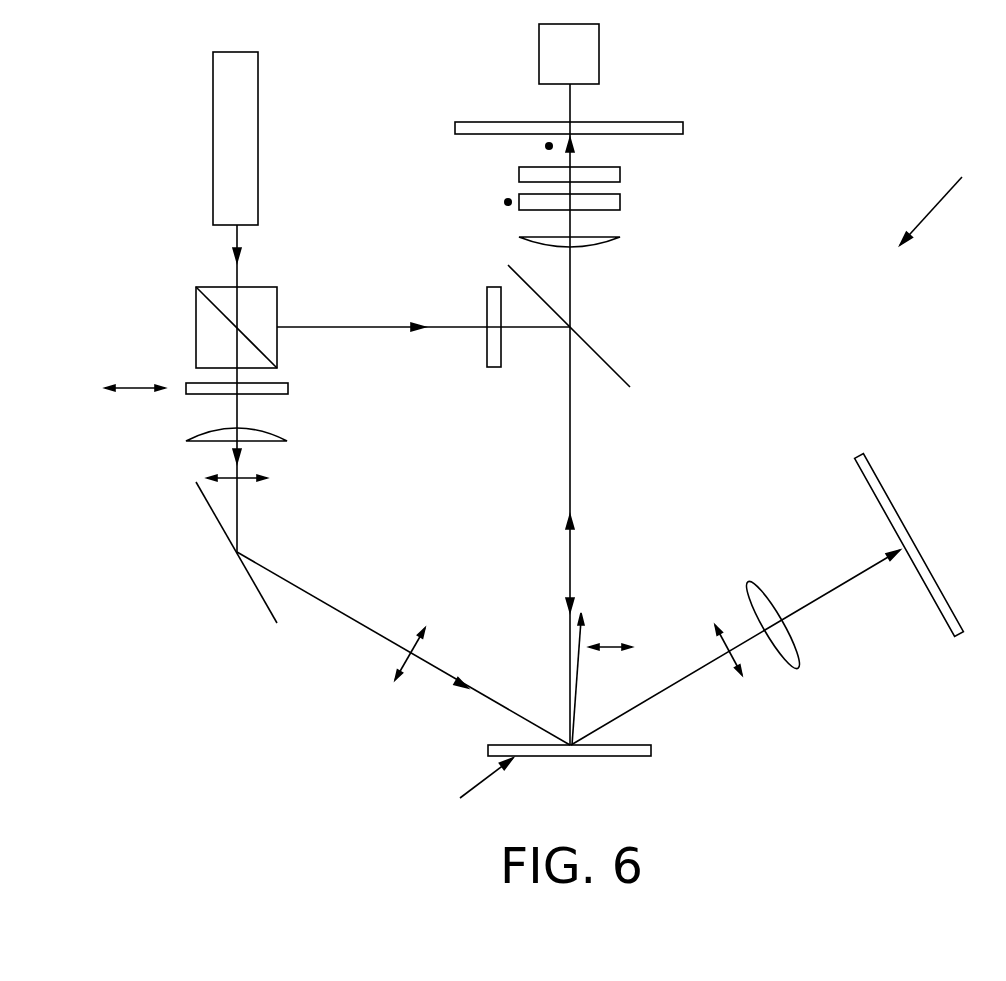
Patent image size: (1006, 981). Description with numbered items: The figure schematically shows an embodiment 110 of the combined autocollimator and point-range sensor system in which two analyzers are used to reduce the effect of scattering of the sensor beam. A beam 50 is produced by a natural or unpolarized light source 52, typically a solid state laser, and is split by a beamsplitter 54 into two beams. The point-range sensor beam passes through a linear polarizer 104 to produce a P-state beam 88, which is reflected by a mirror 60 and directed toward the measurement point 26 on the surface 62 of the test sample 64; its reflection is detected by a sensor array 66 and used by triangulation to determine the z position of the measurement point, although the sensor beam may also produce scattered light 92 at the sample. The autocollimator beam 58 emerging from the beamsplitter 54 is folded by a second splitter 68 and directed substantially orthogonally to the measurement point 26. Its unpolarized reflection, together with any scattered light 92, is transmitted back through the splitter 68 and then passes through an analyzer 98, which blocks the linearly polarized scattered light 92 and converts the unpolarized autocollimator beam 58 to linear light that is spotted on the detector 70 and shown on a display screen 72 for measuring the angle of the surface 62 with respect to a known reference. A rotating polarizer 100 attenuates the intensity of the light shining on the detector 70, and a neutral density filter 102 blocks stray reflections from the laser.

The measurement point 26 is at (580, 722).
The beam 50 is at (238, 235).
The light source 52 is at (258, 97).
The beamsplitter 54 is at (196, 327).
The autocollimator beam 58 is at (313, 327).
The mirror 60 is at (215, 517).
The surface 62 is at (628, 744).
The test sample 64 is at (464, 797).
The sensor array 66 is at (887, 490).
The splitter 68 is at (613, 365).
The detector 70 is at (650, 134).
The display screen 72 is at (599, 52).
The P-state beam 88 is at (240, 416).
The scattered light 92 is at (585, 637).
The analyzer 98 is at (620, 203).
The rotating polarizer 100 is at (519, 172).
The neutral density filter 102 is at (495, 368).
The linear polarizer 104 is at (288, 390).
The embodiment 110 is at (953, 195).